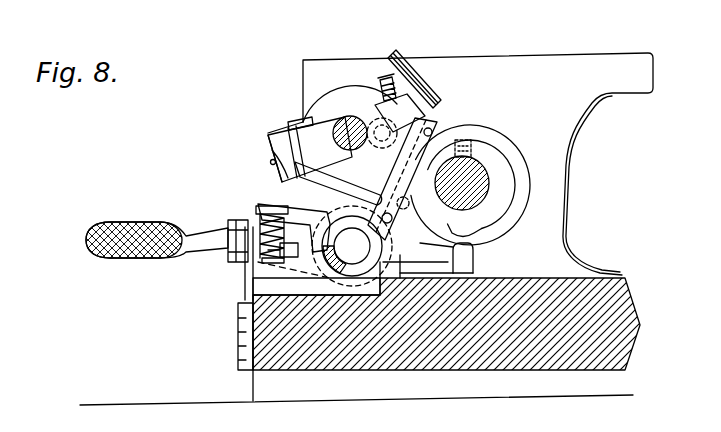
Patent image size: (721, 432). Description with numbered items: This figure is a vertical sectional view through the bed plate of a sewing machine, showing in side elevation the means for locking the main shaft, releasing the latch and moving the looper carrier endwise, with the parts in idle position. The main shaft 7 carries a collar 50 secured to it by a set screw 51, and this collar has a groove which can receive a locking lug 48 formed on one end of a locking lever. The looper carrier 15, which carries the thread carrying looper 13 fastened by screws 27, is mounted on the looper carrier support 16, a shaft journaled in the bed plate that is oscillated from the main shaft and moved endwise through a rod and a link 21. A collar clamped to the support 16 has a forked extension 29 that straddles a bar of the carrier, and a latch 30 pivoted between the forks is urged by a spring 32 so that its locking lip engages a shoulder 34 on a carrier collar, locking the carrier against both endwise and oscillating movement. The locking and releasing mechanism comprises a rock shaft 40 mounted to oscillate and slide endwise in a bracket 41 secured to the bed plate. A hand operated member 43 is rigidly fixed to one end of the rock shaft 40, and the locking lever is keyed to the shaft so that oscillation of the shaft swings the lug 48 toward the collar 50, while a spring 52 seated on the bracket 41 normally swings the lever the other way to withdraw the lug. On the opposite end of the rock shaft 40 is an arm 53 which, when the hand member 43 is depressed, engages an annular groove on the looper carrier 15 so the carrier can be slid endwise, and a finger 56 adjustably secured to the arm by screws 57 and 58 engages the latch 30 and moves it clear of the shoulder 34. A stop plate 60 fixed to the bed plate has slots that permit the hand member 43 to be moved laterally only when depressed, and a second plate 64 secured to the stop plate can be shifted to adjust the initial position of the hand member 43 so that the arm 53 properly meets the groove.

The main shaft 7 is at (497, 156).
The thread carrying looper 13 is at (418, 105).
The looper carrier 15 is at (345, 117).
The looper carrier support 16 is at (374, 119).
The link 21 is at (394, 70).
The screws 27 is at (343, 235).
The forked extension 29 is at (300, 120).
The latch 30 is at (272, 153).
The spring 32 is at (270, 162).
The shoulder 34 is at (290, 135).
The rock shaft 40 is at (352, 246).
The bracket 41 is at (282, 268).
The hand operated member 43 is at (136, 222).
The locking lug 48 is at (473, 254).
The collar 50 is at (502, 181).
The set screw 51 is at (473, 177).
The spring 52 is at (262, 214).
The arm 53 is at (440, 133).
The finger 56 is at (360, 175).
The screw 57 is at (390, 217).
The screw 58 is at (402, 258).
The stop plate 60 is at (253, 278).
The second plate 64 is at (232, 224).